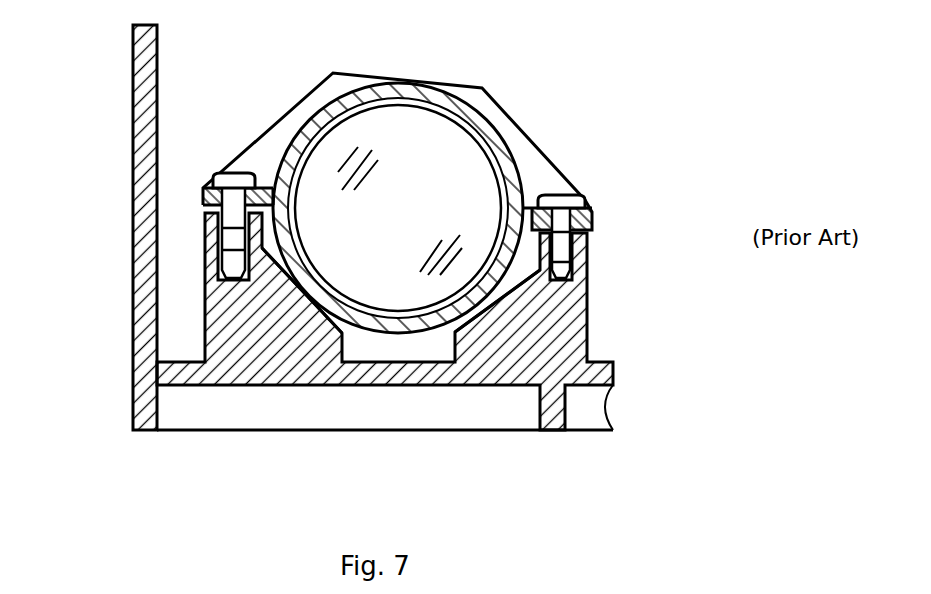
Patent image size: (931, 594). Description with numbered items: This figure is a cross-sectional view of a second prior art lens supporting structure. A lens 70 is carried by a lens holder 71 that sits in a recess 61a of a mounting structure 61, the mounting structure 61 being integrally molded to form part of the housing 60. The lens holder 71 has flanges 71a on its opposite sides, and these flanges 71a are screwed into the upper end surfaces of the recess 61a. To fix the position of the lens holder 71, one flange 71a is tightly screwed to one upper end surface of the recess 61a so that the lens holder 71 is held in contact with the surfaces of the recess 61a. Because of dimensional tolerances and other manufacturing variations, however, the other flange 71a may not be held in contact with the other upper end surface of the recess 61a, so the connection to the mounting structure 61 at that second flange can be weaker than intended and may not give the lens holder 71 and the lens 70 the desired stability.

The housing 60 is at (131, 212).
The mounting structure 61 is at (587, 297).
The recess 61a is at (323, 283).
The lens 70 is at (447, 152).
The lens holder 71 is at (515, 153).
The flange 71a is at (205, 196).